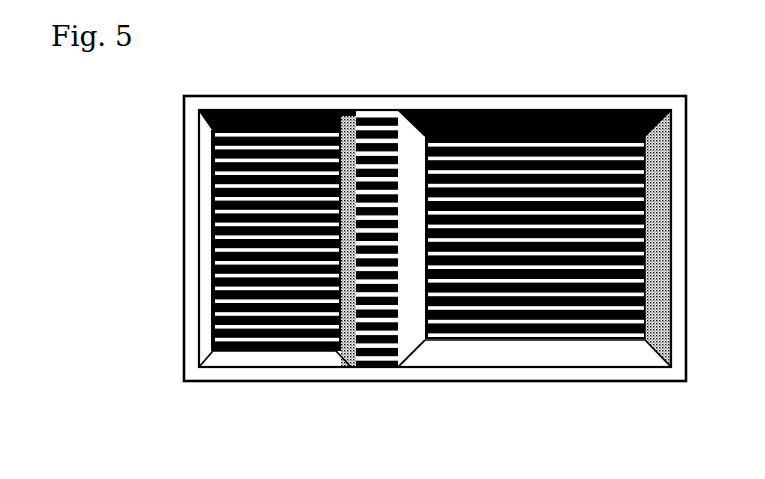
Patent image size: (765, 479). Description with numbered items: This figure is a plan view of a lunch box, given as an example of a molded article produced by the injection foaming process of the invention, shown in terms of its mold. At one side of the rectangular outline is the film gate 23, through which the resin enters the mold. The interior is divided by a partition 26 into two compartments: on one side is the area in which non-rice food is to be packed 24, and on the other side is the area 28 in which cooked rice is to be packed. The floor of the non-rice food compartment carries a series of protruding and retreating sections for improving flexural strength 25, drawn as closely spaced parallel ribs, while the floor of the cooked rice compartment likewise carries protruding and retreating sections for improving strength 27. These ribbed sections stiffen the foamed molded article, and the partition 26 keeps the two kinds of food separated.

The film gate 23 is at (264, 284).
The area in which non-rice food is to be packed 24 is at (232, 350).
The protruding and retreating sections for improving flexural strength 25 is at (293, 343).
The partition 26 is at (365, 350).
The protruding and retreating sections for improving strength 27 is at (518, 325).
The area in which cooked rice is to be packed 28 is at (590, 347).